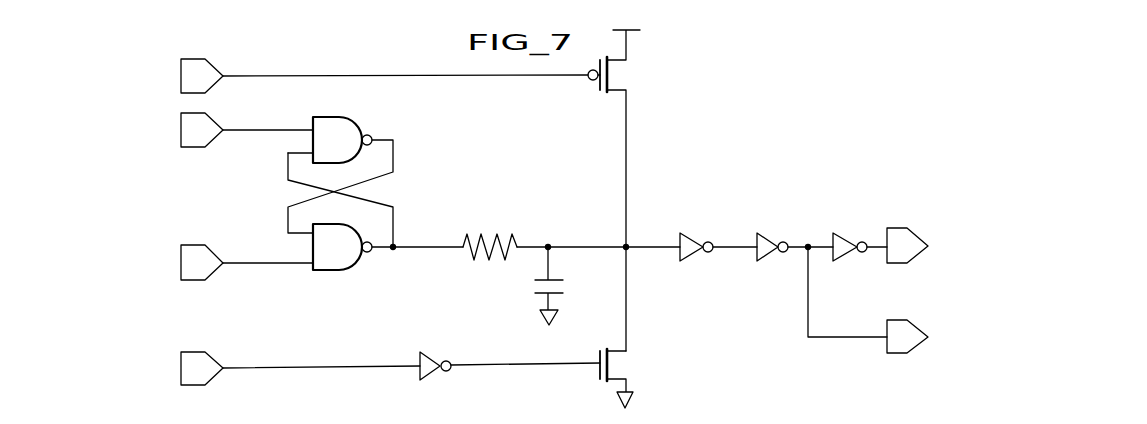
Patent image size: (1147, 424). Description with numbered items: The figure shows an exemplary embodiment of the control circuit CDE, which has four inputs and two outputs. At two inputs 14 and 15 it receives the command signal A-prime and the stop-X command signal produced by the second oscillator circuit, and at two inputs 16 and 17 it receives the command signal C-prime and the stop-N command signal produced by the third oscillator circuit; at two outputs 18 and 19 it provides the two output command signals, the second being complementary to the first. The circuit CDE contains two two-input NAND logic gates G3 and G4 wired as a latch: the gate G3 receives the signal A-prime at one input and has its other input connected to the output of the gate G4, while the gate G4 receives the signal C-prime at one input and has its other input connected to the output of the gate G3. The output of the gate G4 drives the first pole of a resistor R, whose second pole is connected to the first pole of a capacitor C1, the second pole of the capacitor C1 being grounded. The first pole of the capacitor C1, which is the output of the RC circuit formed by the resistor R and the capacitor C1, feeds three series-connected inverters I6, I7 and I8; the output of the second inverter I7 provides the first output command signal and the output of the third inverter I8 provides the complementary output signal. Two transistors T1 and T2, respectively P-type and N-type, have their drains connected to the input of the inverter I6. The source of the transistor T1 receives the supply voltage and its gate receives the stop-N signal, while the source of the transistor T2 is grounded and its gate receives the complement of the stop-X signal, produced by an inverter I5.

The input 14 is at (213, 113).
The input 15 is at (198, 352).
The input 16 is at (197, 245).
The input 17 is at (205, 59).
The output 18 is at (902, 353).
The output 19 is at (900, 228).
The two-input NAND logic gate G3 is at (355, 119).
The two-input NAND logic gate G4 is at (355, 267).
The resistor R is at (490, 232).
The capacitor C1 is at (535, 291).
The first transistor T1 is at (608, 70).
The second transistor T2 is at (608, 360).
The inverter I5 is at (432, 354).
The inverter I6 is at (697, 233).
The second inverter I7 is at (773, 233).
The third inverter I8 is at (850, 233).
The control circuit CDE is at (722, 122).